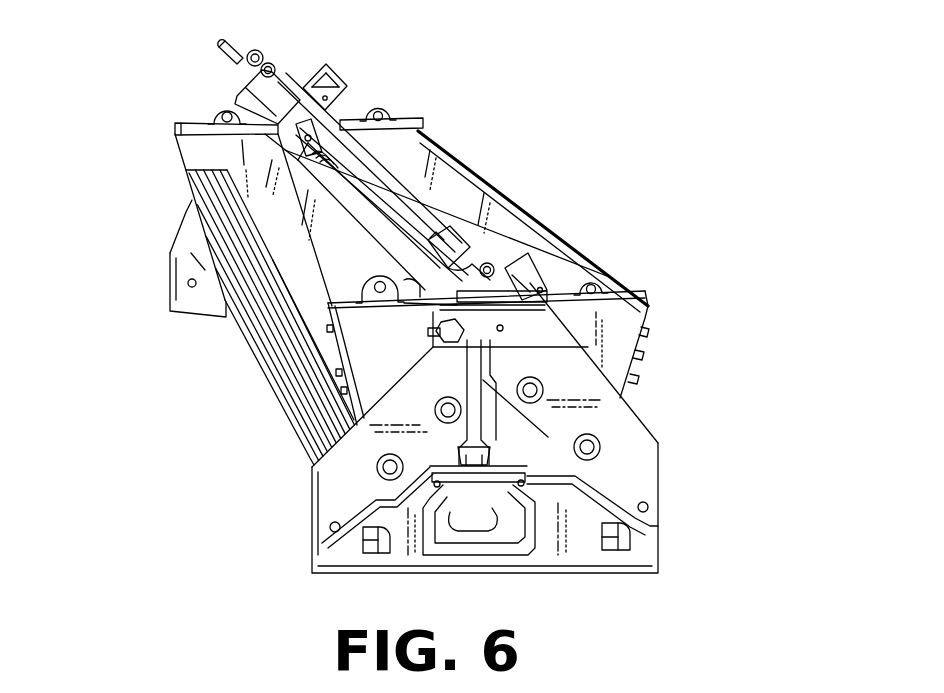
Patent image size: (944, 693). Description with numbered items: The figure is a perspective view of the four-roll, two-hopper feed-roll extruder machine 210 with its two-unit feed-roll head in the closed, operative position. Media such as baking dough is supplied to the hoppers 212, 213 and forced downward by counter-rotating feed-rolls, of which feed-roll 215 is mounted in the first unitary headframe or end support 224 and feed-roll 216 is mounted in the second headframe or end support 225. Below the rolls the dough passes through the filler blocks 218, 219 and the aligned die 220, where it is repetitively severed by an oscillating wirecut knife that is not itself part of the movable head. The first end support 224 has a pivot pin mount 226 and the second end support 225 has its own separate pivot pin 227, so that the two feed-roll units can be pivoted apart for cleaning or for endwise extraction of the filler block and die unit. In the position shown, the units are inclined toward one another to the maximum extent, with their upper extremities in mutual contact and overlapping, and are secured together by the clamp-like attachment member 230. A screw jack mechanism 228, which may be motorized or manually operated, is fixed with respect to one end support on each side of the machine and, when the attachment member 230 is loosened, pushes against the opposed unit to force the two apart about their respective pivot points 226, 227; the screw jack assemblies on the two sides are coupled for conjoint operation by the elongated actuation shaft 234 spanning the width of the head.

The feed-roll extruder machine 210 is at (384, 87).
The hopper 212 is at (522, 196).
The hopper 213 is at (212, 140).
The feed-roll 215 is at (355, 185).
The feed-roll 216 is at (282, 363).
The filler block 218 is at (513, 450).
The filler block 219 is at (443, 458).
The die 220 is at (508, 508).
The first headframe or end support 224 is at (660, 452).
The second headframe or end support 225 is at (316, 470).
The pivot pin mount 226 is at (648, 510).
The pivot pin 227 is at (333, 532).
The screw jack mechanism 228 is at (192, 100).
The clamp-like attachment member 230 is at (380, 310).
The elongated actuation shaft 234 is at (428, 212).